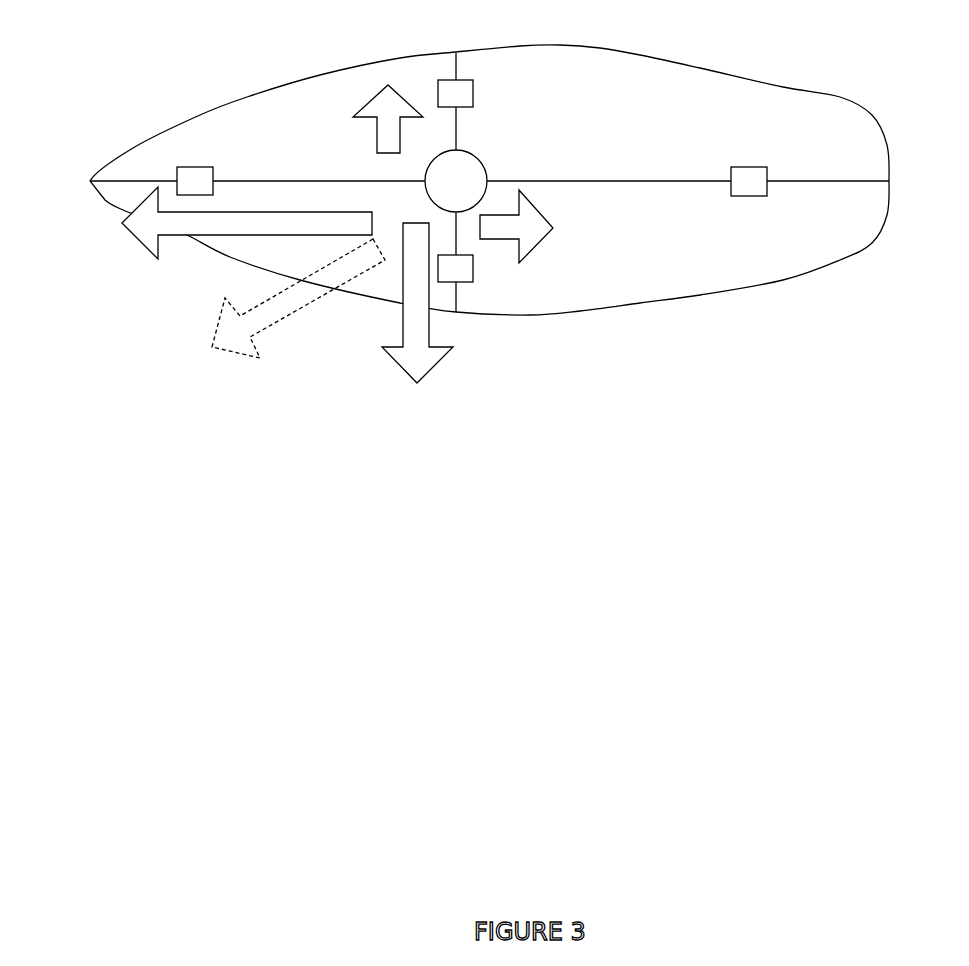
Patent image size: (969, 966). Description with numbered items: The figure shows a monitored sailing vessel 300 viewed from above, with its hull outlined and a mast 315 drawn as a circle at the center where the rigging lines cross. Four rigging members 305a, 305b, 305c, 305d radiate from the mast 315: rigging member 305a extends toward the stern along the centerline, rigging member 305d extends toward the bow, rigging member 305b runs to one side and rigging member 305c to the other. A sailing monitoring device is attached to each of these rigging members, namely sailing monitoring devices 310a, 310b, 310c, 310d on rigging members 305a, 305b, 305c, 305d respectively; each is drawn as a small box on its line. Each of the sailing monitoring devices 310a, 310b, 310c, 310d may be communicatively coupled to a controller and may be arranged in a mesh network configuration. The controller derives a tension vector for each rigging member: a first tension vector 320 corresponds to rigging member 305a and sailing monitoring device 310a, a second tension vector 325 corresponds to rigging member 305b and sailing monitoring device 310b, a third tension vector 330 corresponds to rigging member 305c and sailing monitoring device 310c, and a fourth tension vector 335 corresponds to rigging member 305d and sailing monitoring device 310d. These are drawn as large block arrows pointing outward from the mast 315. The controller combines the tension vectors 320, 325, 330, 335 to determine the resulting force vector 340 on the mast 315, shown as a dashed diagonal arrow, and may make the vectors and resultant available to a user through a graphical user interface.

The sailing vessel 300 is at (250, 98).
The rigging member 305a is at (612, 181).
The rigging member 305b is at (455, 63).
The rigging member 305c is at (458, 238).
The rigging member 305d is at (157, 182).
The sailing monitoring device 310a is at (749, 167).
The sailing monitoring device 310b is at (473, 97).
The sailing monitoring device 310c is at (475, 268).
The sailing monitoring device 310d is at (196, 167).
The mast 315 is at (486, 170).
The first tension vector 320 is at (549, 233).
The second tension vector 325 is at (357, 118).
The third tension vector 330 is at (438, 364).
The fourth tension vector 335 is at (134, 236).
The resulting force vector 340 is at (236, 351).